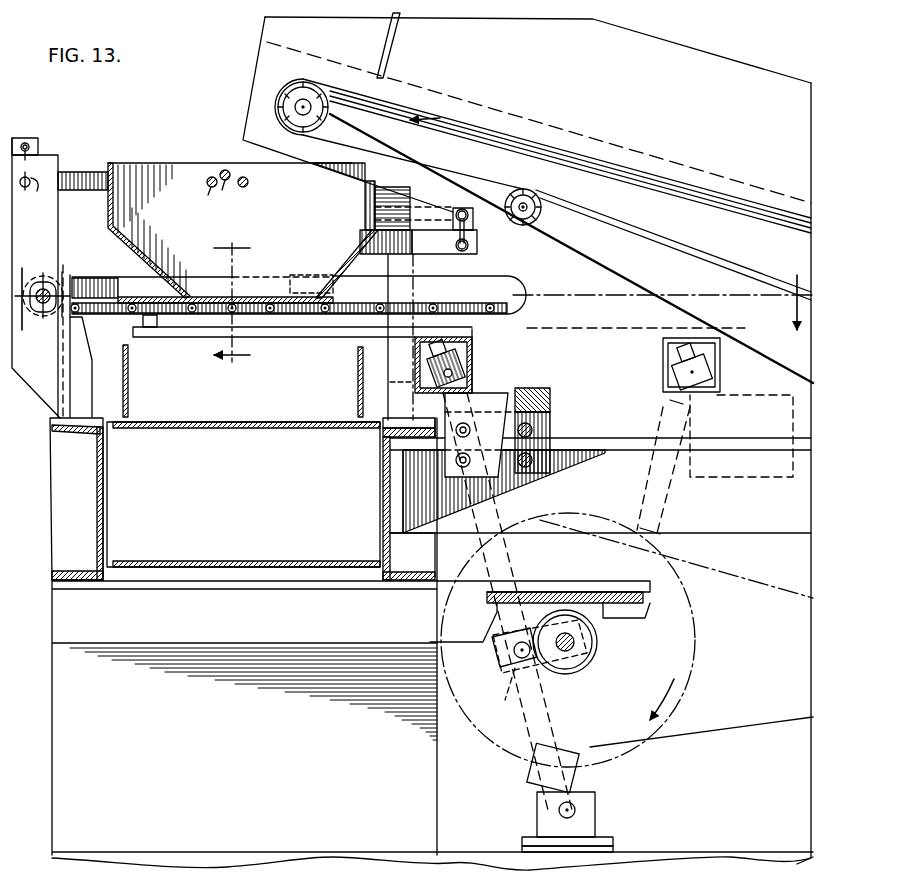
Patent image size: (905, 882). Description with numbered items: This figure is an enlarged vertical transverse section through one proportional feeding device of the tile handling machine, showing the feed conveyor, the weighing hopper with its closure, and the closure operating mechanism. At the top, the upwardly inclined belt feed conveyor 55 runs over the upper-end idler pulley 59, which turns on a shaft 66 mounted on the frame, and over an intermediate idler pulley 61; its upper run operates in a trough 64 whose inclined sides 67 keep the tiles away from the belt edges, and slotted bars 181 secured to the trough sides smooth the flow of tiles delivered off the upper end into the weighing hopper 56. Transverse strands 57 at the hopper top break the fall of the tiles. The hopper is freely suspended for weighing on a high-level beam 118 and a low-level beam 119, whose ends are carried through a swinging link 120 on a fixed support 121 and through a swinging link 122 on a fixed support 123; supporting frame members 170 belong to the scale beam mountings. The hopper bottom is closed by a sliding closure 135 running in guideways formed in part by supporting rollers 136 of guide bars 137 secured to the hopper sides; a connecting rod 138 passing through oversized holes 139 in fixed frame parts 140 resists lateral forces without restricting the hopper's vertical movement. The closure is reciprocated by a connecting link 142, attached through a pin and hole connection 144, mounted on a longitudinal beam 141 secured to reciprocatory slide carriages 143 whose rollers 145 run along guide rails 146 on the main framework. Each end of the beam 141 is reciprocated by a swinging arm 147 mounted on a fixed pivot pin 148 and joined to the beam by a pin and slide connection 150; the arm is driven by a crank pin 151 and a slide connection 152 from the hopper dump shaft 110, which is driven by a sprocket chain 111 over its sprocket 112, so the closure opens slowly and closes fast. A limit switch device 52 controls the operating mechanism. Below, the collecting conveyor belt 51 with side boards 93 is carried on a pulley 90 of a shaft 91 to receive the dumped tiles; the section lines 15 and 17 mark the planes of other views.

The trough 64 is at (760, 87).
The inclined sides 67 is at (702, 62).
The slotted bars 181 is at (402, 48).
The belt feed conveyor 55 is at (700, 200).
The shaft 66 is at (313, 108).
The pulley 59 is at (282, 90).
The supporting frame members 170 is at (249, 116).
The idler pulley 61 is at (543, 213).
The fixed support 123 is at (478, 199).
The swinging link 122 is at (477, 238).
The low-level beam 119 is at (372, 252).
The weighing hopper 56 is at (141, 172).
The transverse strands 57 is at (212, 195).
The high-level beam 118 is at (78, 178).
The fixed frame parts 140 is at (60, 232).
The fixed support 121 is at (40, 146).
The swinging link 120 is at (38, 195).
The connecting rod 138 is at (46, 288).
The oversized holes 139 is at (49, 312).
The sliding closure 135 is at (118, 296).
The supporting rollers 136 is at (130, 313).
The guide bars 137 is at (526, 285).
The pin and hole connection 144 is at (148, 329).
The connecting link 142 is at (352, 333).
The section line 17- 17 is at (248, 303).
The section line 15- 15 is at (413, 288).
The side boards 93 is at (128, 400).
The collecting conveyor belt 51 is at (248, 422).
The shaft 91 is at (100, 487).
The limit switch device 52 is at (383, 380).
The guide rails 146 is at (627, 441).
The rollers 145 is at (470, 432).
The slide carriages 143 is at (532, 389).
The longitudinal beam 141 is at (474, 358).
The pin and slide connection 150 is at (472, 366).
The swinging arm 147 is at (642, 510).
The pulley 90 is at (200, 548).
The sprocket chain 111 is at (748, 580).
The hopper dump shaft 110 is at (575, 641).
The sprocket 112 is at (682, 694).
The crank pin 151 is at (512, 668).
The slide connection 152 is at (513, 690).
The fixed pivot pin 148 is at (577, 812).